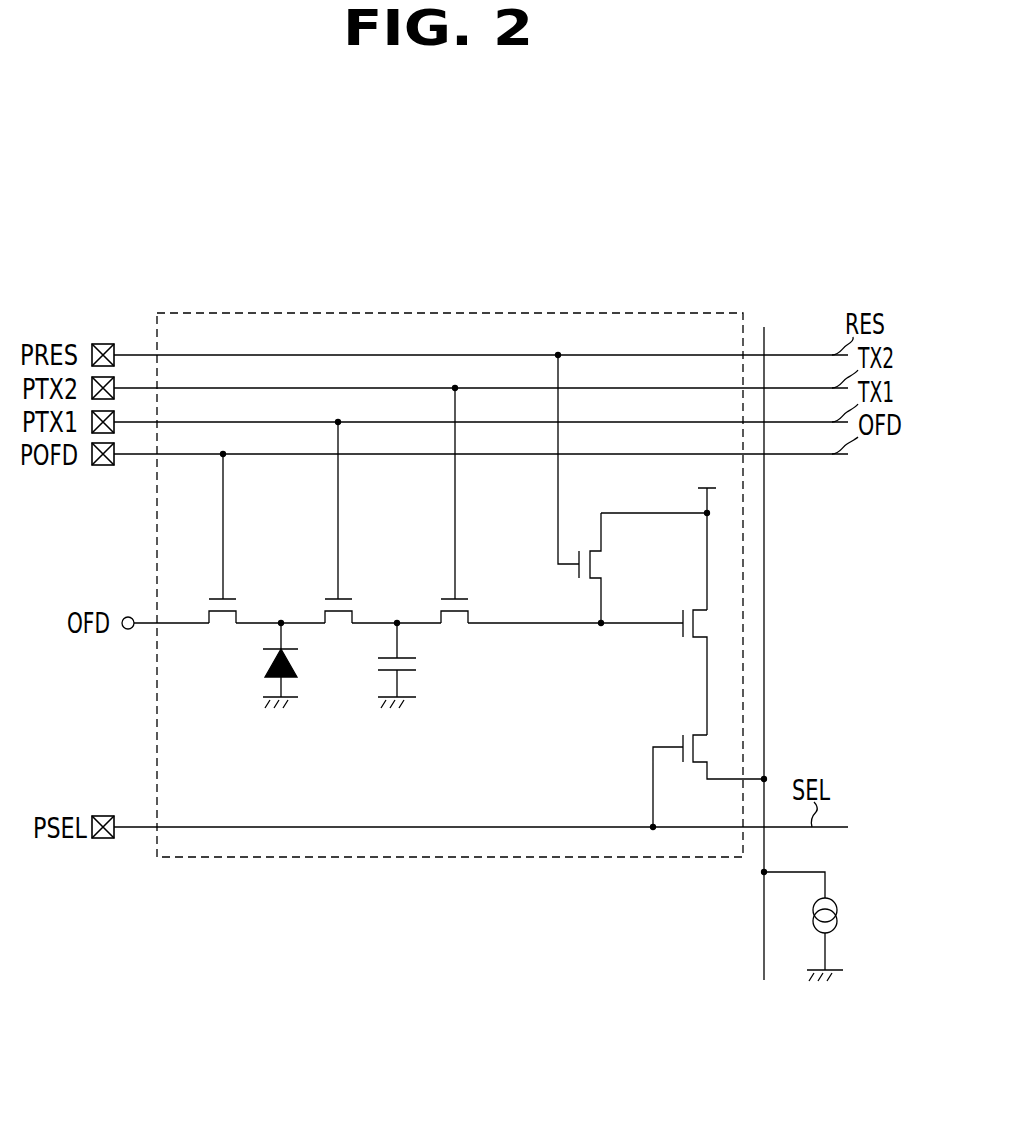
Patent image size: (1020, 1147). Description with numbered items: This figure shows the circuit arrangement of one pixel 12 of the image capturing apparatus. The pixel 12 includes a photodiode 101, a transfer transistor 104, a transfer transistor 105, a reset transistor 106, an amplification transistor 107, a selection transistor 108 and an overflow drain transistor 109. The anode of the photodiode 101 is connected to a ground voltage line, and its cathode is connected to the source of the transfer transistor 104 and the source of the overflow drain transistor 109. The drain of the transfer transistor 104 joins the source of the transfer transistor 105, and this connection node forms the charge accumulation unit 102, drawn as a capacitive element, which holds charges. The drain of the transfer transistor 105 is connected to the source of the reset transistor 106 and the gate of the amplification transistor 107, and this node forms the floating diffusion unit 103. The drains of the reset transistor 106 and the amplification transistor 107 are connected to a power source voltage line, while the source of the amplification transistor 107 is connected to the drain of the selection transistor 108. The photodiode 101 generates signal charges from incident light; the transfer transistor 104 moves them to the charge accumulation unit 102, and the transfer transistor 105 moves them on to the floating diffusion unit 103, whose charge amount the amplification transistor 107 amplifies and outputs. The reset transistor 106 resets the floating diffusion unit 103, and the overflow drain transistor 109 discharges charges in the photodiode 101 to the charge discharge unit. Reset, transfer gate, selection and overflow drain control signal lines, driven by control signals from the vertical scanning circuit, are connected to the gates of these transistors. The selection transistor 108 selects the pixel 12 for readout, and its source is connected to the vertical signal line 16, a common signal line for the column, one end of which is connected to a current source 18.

The pixel 12 is at (587, 313).
The vertical signal line 16 is at (766, 524).
The current source 18 is at (840, 905).
The photodiode 101 is at (265, 663).
The charge accumulation unit 102 is at (418, 665).
The floating diffusion unit 103 is at (601, 627).
The transfer transistor 104 is at (373, 593).
The transfer transistor 105 is at (489, 593).
The reset transistor 106 is at (601, 568).
The amplification transistor 107 is at (690, 642).
The selection transistor 108 is at (680, 736).
The overflow drain transistor 109 is at (238, 604).